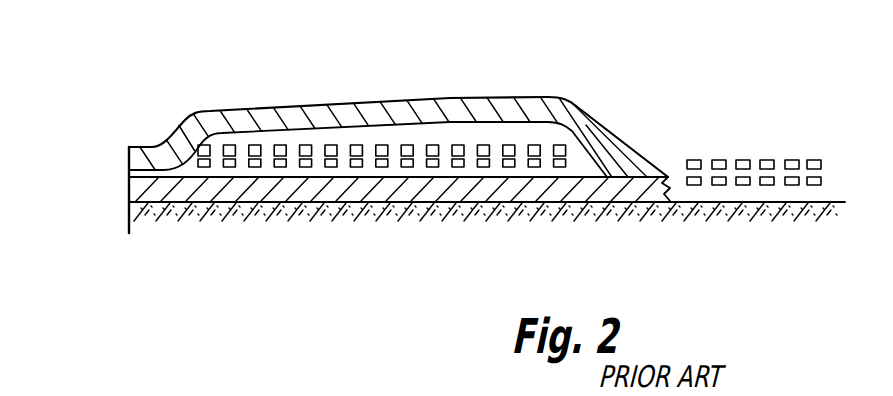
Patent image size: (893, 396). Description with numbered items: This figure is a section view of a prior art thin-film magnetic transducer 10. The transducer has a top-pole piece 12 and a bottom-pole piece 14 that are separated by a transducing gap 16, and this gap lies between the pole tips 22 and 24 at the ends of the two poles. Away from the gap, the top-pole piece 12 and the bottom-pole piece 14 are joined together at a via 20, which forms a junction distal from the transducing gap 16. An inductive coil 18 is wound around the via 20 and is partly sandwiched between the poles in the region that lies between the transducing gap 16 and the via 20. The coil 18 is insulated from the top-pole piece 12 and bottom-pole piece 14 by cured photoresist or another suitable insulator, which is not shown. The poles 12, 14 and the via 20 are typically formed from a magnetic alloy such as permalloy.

The thin-film magnetic transducer 10 is at (117, 66).
The top-pole piece 12 is at (196, 111).
The bottom-pole piece 14 is at (131, 203).
The transducing gap 16 is at (127, 170).
The inductive coil 18 is at (257, 145).
The via 20 is at (644, 167).
The pole tip 22 is at (128, 150).
The pole tip 24 is at (128, 185).